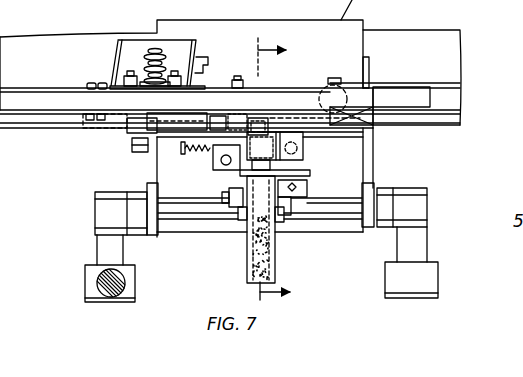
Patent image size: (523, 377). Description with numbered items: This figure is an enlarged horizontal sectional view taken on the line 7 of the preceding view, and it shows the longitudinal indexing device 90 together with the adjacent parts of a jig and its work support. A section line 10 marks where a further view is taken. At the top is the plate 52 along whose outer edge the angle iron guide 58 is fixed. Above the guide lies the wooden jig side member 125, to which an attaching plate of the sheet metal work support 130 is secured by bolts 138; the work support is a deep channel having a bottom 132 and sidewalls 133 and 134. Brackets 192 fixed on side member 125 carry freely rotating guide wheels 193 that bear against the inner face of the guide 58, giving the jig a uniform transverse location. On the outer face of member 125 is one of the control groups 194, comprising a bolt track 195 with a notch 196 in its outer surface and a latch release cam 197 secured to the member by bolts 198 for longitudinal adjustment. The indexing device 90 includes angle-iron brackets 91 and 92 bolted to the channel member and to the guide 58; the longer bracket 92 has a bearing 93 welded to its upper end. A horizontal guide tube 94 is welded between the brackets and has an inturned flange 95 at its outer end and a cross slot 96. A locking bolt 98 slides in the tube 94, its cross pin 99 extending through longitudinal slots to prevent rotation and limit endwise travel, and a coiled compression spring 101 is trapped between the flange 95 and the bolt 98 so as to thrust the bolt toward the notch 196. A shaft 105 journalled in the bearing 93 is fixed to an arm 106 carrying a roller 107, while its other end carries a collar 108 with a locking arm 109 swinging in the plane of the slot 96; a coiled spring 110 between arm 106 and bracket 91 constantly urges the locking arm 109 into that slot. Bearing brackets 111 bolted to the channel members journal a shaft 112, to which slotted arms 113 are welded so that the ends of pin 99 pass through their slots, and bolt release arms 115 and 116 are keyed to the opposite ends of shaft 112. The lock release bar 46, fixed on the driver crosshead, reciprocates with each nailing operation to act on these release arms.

The plate 52 is at (437, 42).
The wooden jig side member 125 is at (0, 90).
The sheet metal work support 130 is at (116, 56).
The sidewall 133 is at (120, 41).
The bottom 132 is at (142, 48).
The bolts 138 is at (178, 70).
The sidewall 134 is at (204, 50).
The section line 10- 10 is at (288, 171).
The section indicator 7 is at (521, 101).
The brackets 192 is at (364, 58).
The guide wheels 193 is at (372, 90).
The bolt track 195 is at (377, 108).
The angle-iron bracket 92 is at (288, 134).
The angle-iron bracket 91 is at (218, 122).
The angle iron guide 58 is at (457, 125).
The control group 194 is at (383, 129).
The bolts 198 is at (97, 87).
The latch release cam 197 is at (193, 124).
The locking bolt 98 is at (257, 120).
The notch 196 is at (260, 123).
The bearing 93 is at (305, 143).
The shaft 105 is at (305, 152).
The longitudinal indexing device 90 is at (371, 150).
The locking arm 109 is at (306, 177).
The collar 108 is at (308, 191).
The bearing brackets 111 is at (153, 189).
The roller 107 is at (125, 133).
The arm 106 is at (129, 137).
The coiled spring 110 is at (191, 153).
The cross slot 96 is at (246, 172).
The cross pin 99 is at (229, 197).
The shaft 112 is at (200, 208).
The slotted arms 113 is at (237, 222).
The horizontal guide tube 94 is at (276, 258).
The coiled compression spring 101 is at (250, 252).
The inturned flange 95 is at (252, 281).
The bolt release arm 115 is at (110, 243).
The lock release bar 46 is at (112, 298).
The bolt release arm 116 is at (413, 232).